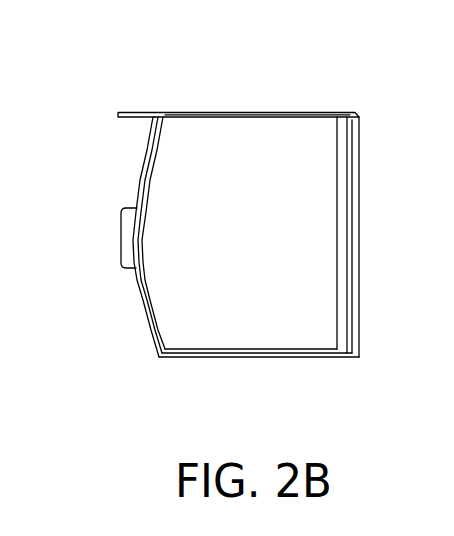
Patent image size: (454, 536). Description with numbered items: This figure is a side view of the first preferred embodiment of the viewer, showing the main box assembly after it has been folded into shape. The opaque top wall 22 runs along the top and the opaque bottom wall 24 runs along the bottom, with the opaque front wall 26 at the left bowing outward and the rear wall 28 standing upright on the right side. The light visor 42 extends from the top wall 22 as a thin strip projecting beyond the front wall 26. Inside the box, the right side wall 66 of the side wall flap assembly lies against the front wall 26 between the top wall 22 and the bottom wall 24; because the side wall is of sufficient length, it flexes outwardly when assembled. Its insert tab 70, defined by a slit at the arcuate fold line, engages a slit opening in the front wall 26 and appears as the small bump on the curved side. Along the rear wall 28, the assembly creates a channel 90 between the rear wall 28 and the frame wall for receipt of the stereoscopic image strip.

The top wall 22 is at (284, 112).
The bottom wall 24 is at (200, 358).
The front wall 26 is at (138, 286).
The rear wall 28 is at (360, 162).
The light visor 42 is at (134, 112).
The right side wall 66 is at (180, 179).
The insert tab 70 is at (130, 232).
The channel 90 is at (339, 257).